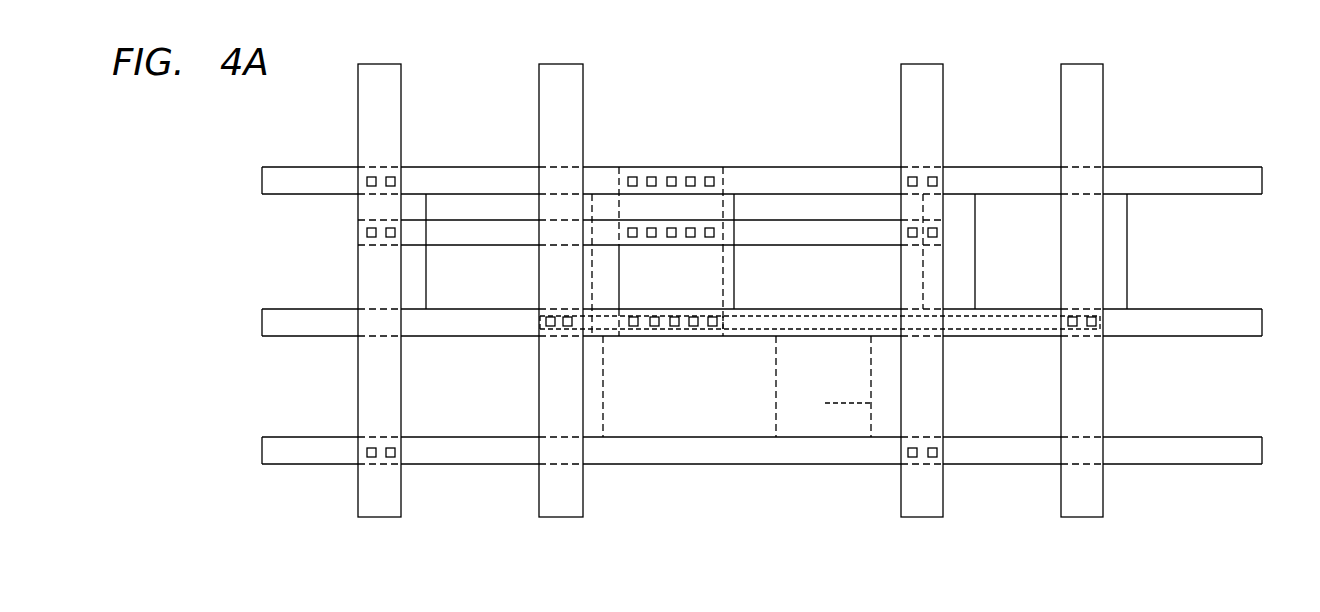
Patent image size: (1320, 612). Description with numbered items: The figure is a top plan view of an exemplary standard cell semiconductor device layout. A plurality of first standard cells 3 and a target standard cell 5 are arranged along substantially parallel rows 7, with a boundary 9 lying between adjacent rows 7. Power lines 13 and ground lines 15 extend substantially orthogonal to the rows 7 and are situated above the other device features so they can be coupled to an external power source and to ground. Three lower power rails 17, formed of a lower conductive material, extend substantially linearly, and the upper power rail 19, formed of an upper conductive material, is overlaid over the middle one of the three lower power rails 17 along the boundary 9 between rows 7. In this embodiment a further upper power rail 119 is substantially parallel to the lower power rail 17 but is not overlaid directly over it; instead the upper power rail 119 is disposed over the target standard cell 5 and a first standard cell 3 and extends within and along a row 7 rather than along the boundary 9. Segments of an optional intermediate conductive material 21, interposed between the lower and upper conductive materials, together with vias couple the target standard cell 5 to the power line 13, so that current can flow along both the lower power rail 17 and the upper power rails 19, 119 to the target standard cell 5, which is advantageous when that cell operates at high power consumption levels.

The first standard cell 3 is at (504, 290).
The target standard cell 5 is at (638, 290).
The row 7 is at (274, 244).
The boundary 9 is at (244, 321).
The power line 13 is at (397, 88).
The ground line 15 is at (578, 88).
The lower power rail 17 is at (312, 178).
The upper power rail 19 is at (823, 329).
The intermediate conductive material 21 is at (660, 210).
The upper power rail 119 is at (473, 232).